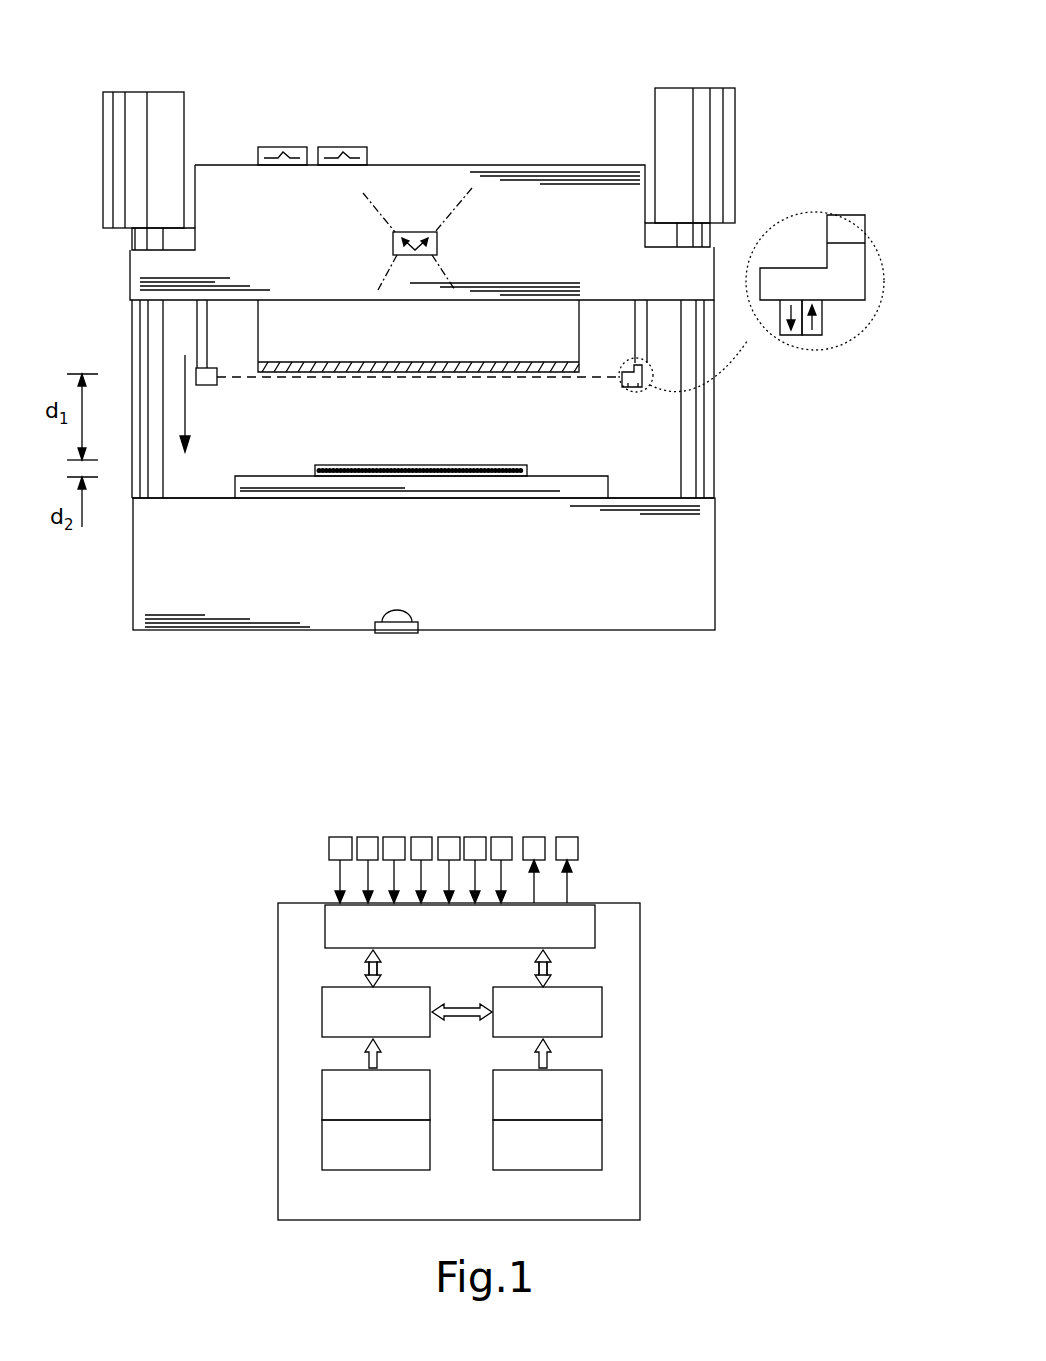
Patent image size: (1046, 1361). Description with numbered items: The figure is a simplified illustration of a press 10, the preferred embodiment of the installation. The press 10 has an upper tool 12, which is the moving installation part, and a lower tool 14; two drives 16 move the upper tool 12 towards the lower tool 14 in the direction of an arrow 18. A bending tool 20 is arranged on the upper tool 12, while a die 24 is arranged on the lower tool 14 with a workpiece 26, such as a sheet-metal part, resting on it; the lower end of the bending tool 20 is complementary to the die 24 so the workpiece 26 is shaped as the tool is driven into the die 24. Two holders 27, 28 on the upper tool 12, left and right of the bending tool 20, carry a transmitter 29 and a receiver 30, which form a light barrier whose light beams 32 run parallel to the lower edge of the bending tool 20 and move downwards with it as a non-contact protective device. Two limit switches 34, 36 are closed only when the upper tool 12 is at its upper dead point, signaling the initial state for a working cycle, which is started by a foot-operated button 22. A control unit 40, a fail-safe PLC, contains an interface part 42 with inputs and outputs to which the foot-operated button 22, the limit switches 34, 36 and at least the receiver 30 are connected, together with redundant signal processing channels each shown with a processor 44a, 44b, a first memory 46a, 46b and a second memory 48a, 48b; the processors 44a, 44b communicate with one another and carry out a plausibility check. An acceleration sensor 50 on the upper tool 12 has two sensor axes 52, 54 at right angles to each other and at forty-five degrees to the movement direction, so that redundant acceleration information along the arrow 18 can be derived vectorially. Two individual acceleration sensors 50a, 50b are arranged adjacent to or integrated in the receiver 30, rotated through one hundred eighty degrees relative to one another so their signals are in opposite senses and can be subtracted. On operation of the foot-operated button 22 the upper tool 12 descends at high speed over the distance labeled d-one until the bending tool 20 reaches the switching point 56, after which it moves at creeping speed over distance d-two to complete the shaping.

The press 10 is at (213, 700).
The upper tool 12 is at (145, 270).
The lower tool 14 is at (690, 575).
The drives 16 is at (120, 112).
The arrow 18 is at (188, 408).
The bending tool 20 is at (334, 343).
The foot-operated button 22 is at (400, 633).
The die 24 is at (495, 488).
The workpiece 26 is at (440, 477).
The holder 27 is at (200, 335).
The holder 28 is at (643, 335).
The transmitter 29 is at (213, 385).
The receiver 30 is at (838, 288).
The light beams 32 is at (565, 378).
The limit switch 34 is at (275, 147).
The limit switch 36 is at (335, 147).
The control unit 40 is at (278, 952).
The interface part 42 is at (585, 925).
The processor 44a is at (322, 1020).
The processor 44b is at (602, 1005).
The first memory 46a is at (322, 1100).
The first memory 46b is at (602, 1093).
The second memory 48a is at (322, 1152).
The second memory 48b is at (602, 1140).
The acceleration sensor 50 is at (415, 232).
The acceleration sensor 50a is at (791, 336).
The acceleration sensor 50b is at (818, 336).
The sensor axis 52 is at (365, 193).
The sensor axis 54 is at (470, 192).
The switching point 56 is at (84, 467).